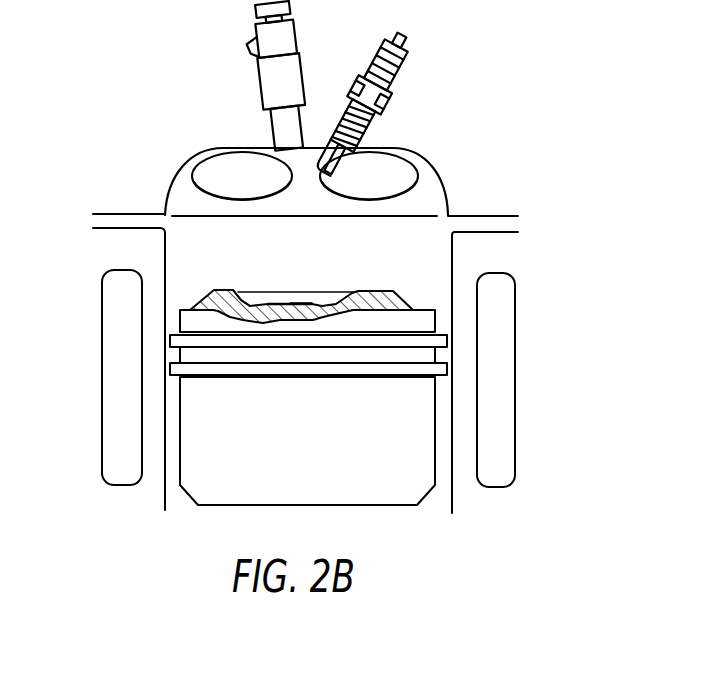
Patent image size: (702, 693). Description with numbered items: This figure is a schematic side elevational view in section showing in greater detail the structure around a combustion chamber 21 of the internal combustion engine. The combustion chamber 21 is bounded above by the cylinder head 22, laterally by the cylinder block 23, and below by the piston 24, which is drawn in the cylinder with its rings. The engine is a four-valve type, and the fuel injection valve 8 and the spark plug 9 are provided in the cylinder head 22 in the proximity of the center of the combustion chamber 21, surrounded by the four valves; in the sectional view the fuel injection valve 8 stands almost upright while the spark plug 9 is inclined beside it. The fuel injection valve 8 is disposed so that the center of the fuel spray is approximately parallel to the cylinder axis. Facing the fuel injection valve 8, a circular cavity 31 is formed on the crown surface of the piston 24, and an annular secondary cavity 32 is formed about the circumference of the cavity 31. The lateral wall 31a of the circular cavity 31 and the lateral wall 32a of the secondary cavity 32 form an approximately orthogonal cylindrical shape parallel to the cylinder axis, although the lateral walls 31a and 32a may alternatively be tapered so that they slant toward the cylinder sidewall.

The fuel injection valve 8 is at (270, 82).
The spark plug 9 is at (383, 91).
The combustion chamber 21 is at (433, 193).
The cylinder head 22 is at (505, 213).
The cylinder block 23 is at (495, 253).
The piston 24 is at (417, 403).
The circular cavity 31 is at (312, 303).
The lateral wall of the circular cavity 31a is at (315, 303).
The annular secondary cavity 32 is at (255, 297).
The lateral wall of the annular secondary cavity 32a is at (238, 296).